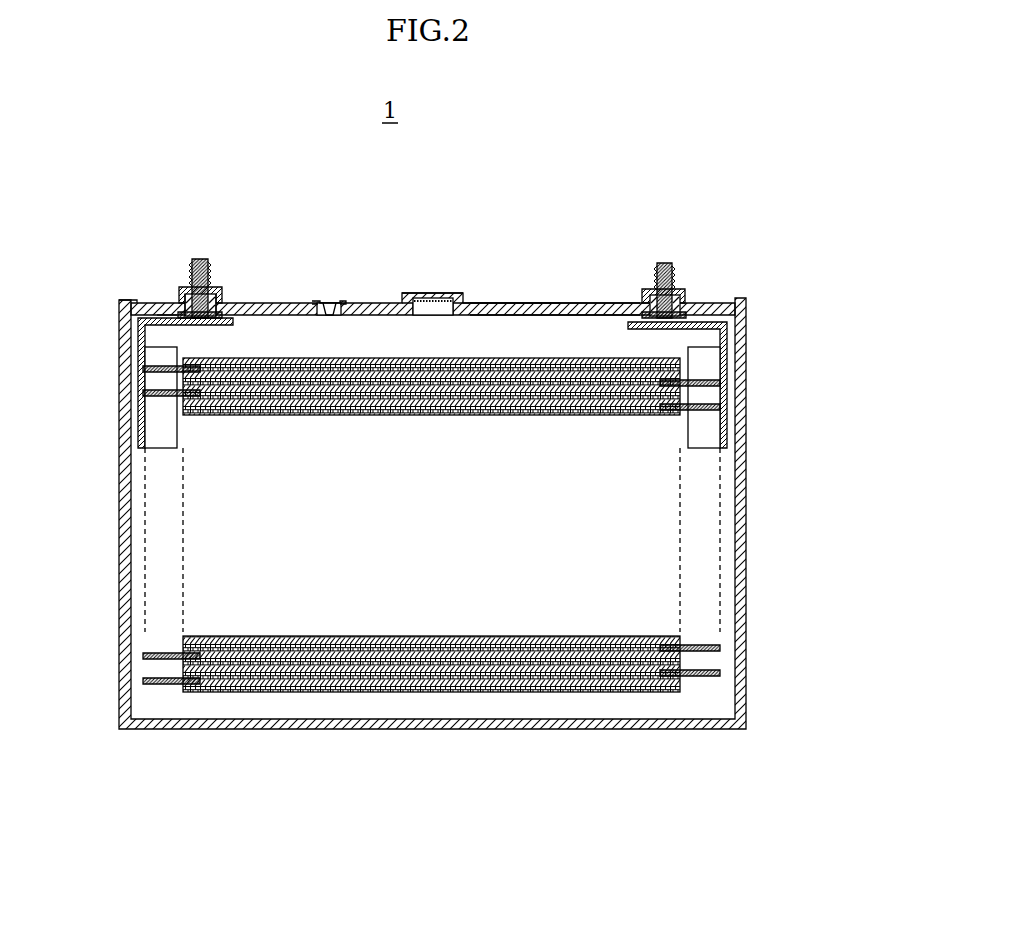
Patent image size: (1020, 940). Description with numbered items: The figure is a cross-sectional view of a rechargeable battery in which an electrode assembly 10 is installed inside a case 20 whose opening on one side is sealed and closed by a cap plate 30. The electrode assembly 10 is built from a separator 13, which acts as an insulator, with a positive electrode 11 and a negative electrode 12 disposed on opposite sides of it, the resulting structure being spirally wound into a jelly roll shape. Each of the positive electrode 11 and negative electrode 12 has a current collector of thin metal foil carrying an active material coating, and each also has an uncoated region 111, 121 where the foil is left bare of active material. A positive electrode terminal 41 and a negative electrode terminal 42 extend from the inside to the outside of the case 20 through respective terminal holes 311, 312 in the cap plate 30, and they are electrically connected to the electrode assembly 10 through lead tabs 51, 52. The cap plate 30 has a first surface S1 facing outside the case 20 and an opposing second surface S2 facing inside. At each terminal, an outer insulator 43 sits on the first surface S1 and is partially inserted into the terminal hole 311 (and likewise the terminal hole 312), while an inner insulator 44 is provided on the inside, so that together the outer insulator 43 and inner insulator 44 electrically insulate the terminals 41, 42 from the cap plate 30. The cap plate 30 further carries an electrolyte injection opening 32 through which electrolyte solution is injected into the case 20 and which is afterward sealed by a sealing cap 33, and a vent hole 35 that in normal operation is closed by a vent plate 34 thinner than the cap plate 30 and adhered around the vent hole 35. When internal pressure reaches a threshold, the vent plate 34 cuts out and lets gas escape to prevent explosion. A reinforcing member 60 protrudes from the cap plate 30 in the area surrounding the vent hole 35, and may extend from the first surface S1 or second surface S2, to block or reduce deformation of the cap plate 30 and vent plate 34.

The electrode assembly 10 is at (431, 581).
The positive electrode 11 is at (213, 583).
The negative electrode 12 is at (519, 590).
The separator 13 is at (434, 678).
The uncoated region 111 is at (165, 683).
The uncoated region 121 is at (698, 676).
The case 20 is at (592, 723).
The cap plate 30 is at (514, 305).
The terminal hole 311 is at (222, 289).
The terminal hole 312 is at (653, 289).
The electrolyte injection opening 32 is at (336, 305).
The sealing cap 33 is at (322, 302).
The vent plate 34 is at (442, 297).
The vent hole 35 is at (430, 310).
The positive electrode terminal 41 is at (198, 258).
The negative electrode terminal 42 is at (665, 262).
The outer insulator 43 is at (175, 298).
The inner insulator 44 is at (158, 315).
The lead tab 51 is at (137, 355).
The lead tab 52 is at (728, 380).
The member 60 is at (468, 300).
The first surface S1 is at (556, 300).
The second surface S2 is at (564, 323).